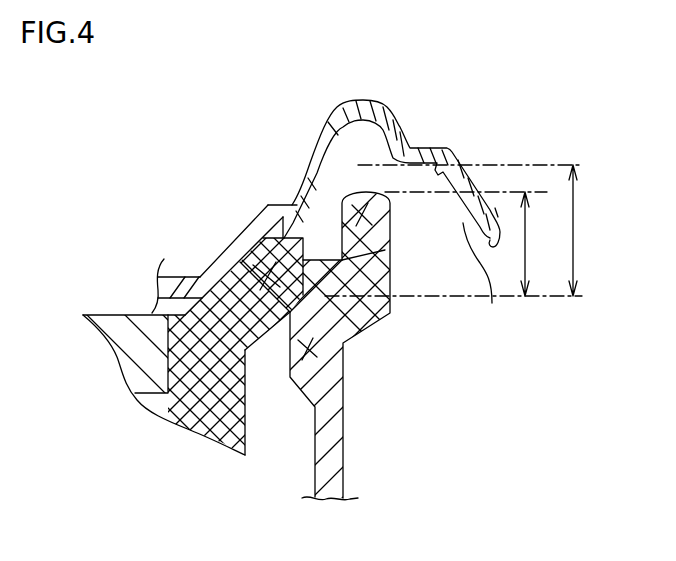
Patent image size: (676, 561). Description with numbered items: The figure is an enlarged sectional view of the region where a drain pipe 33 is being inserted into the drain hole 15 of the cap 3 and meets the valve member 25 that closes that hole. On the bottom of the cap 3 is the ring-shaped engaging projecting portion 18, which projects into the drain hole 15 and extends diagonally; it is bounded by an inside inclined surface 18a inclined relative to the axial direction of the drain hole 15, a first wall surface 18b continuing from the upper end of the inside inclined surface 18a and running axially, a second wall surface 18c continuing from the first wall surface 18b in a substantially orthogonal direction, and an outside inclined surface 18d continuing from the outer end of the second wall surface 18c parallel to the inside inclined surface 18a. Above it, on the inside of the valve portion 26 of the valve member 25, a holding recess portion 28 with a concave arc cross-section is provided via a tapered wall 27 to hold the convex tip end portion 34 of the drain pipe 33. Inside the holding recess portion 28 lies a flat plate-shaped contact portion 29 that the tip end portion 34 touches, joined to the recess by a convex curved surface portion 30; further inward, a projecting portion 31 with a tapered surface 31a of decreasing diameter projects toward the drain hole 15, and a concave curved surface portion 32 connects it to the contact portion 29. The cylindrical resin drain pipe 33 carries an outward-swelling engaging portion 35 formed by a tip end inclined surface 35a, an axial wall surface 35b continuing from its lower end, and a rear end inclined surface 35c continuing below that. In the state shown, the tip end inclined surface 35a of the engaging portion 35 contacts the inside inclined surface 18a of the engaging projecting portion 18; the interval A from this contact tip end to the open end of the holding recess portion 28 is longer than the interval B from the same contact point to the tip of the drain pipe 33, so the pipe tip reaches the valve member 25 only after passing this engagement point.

The cap 3 is at (106, 349).
The drain hole 15 is at (243, 420).
The engaging projecting portion 18 is at (157, 413).
The inside inclined surface 18a is at (213, 414).
The first wall surface 18b is at (319, 279).
The second wall surface 18c is at (283, 208).
The outside inclined surface 18d is at (226, 282).
The valve member 25 is at (394, 107).
The valve portion 26 is at (240, 257).
The tapered wall 27 is at (317, 182).
The holding recess portion 28 is at (352, 112).
The contact portion 29 is at (425, 146).
The curved surface portion 30 is at (370, 158).
The projecting portion 31 is at (462, 213).
The tapered surface 31a is at (493, 326).
The curved surface portion 32 is at (460, 160).
The drain pipe 33 is at (356, 397).
The tip end portion 34 is at (372, 210).
The engaging portion 35 is at (343, 420).
The tip end inclined surface 35a is at (328, 263).
The wall surface 35b is at (284, 385).
The rear end inclined surface 35c is at (301, 405).
The interval A is at (575, 222).
The interval B is at (530, 245).